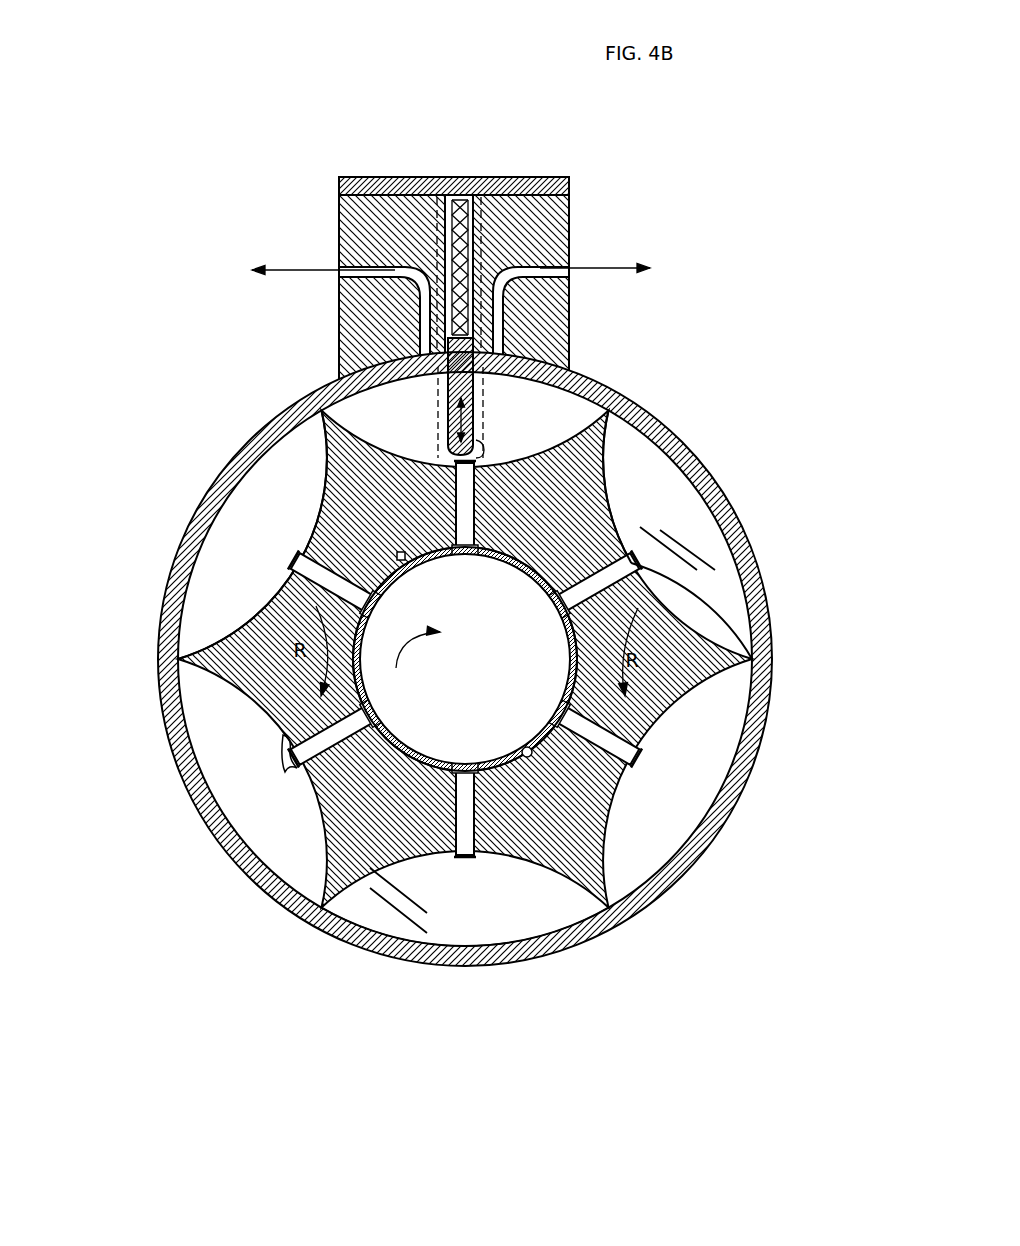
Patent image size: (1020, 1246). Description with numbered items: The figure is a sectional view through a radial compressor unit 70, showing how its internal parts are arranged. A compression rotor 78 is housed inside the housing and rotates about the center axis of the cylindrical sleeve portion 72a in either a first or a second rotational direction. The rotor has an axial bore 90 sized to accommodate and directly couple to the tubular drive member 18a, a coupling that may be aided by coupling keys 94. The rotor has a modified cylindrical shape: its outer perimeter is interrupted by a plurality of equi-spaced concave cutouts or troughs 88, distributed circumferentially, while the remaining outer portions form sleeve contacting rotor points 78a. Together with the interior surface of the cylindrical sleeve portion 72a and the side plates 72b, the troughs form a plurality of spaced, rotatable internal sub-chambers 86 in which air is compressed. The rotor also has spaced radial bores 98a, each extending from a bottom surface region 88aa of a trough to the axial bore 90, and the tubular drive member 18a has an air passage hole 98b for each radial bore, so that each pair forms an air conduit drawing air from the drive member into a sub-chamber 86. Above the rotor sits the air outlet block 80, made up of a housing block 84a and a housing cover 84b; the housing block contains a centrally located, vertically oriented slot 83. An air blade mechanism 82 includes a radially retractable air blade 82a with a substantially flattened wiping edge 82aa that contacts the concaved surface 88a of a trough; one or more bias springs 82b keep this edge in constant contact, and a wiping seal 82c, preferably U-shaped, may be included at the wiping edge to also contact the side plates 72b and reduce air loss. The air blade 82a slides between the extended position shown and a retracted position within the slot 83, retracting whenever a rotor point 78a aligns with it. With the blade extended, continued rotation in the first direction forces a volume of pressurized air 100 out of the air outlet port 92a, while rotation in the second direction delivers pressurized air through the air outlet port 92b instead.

The tubular drive member 18a is at (570, 665).
The compressor unit 70 is at (291, 950).
The cylindrical sleeve portion 72a is at (765, 655).
The side plates 72b is at (485, 730).
The compression rotor 78 is at (215, 903).
The sleeve contacting rotor points 78a is at (621, 420).
The air outlet block 80 is at (300, 160).
The air blade mechanism 82 is at (464, 195).
The air blade 82a is at (484, 398).
The wiping edge 82aa is at (440, 450).
The bias springs 82b is at (430, 195).
The wiping seal 82c is at (484, 446).
The slot 83 is at (470, 215).
The housing block 84a is at (345, 222).
The housing cover 84b is at (530, 177).
The sub-chambers 86 is at (469, 911).
The troughs 88 is at (743, 592).
The concaved surface 88a is at (307, 507).
The bottom surface region 88aa is at (278, 742).
The axial bore 90 is at (465, 659).
The air outlet port 92a is at (528, 282).
The air outlet port 92b is at (392, 282).
The coupling keys 94 is at (524, 746).
The radial bores 98a is at (268, 552).
The air passage hole 98b is at (562, 610).
The pressurized air 100 is at (300, 287).